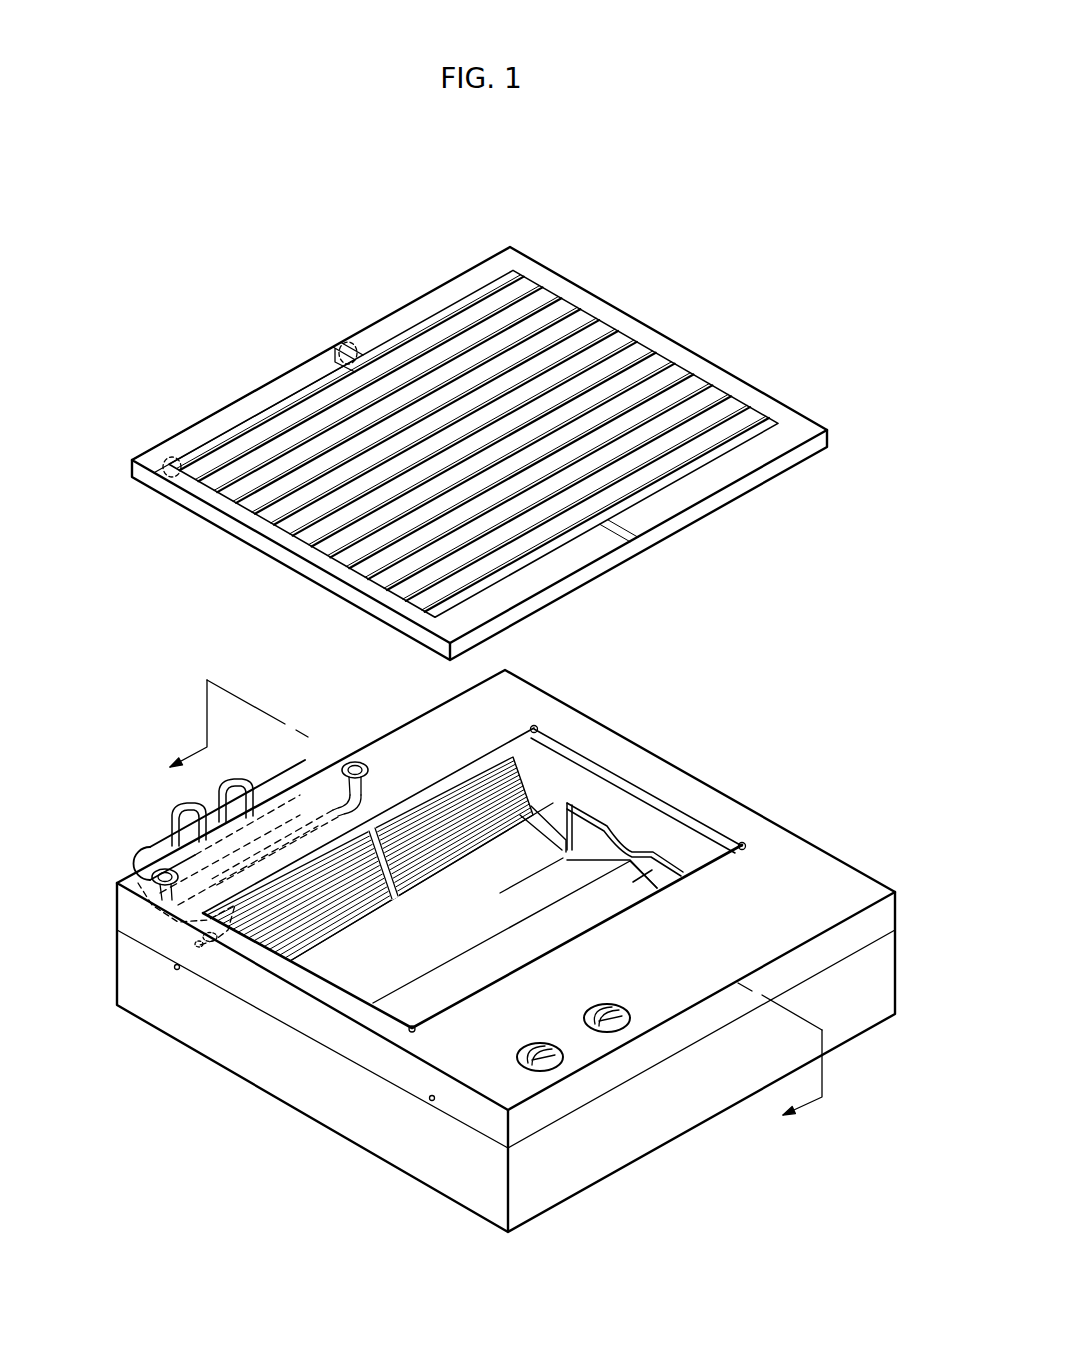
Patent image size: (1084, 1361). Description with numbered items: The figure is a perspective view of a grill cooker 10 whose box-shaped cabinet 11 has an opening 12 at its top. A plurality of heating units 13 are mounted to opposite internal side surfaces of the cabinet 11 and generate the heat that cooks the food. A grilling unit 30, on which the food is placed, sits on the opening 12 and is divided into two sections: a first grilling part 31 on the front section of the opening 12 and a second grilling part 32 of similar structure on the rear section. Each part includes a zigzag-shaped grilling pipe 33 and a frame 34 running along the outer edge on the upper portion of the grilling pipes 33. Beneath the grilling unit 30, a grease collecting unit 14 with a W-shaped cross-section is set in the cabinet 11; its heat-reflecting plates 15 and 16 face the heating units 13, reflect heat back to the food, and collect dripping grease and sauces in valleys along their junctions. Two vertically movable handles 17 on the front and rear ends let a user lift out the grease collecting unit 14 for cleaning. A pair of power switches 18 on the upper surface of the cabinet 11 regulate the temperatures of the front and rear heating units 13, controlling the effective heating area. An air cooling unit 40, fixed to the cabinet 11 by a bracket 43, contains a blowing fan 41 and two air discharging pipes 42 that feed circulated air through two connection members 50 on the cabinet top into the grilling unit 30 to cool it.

The grill cooker 10 is at (509, 895).
The cabinet 11 is at (835, 958).
The opening 12 is at (660, 805).
The heating units 13 is at (367, 883).
The grease collecting unit 14 is at (377, 977).
The heat-reflecting plate 15 is at (588, 865).
The heat-reflecting plate 16 is at (543, 823).
The handles 17 is at (615, 830).
The power switches 18 is at (617, 1022).
The grilling unit 30 is at (293, 253).
The first grilling part 31 is at (285, 372).
The second grilling part 32 is at (335, 337).
The grilling pipe 33 is at (628, 367).
The frame 34 is at (190, 433).
The air cooling unit 40 is at (209, 815).
The blowing fan 41 is at (163, 848).
The air discharging pipes 42 is at (300, 823).
The bracket 43 is at (207, 928).
The connection members 50 is at (355, 760).